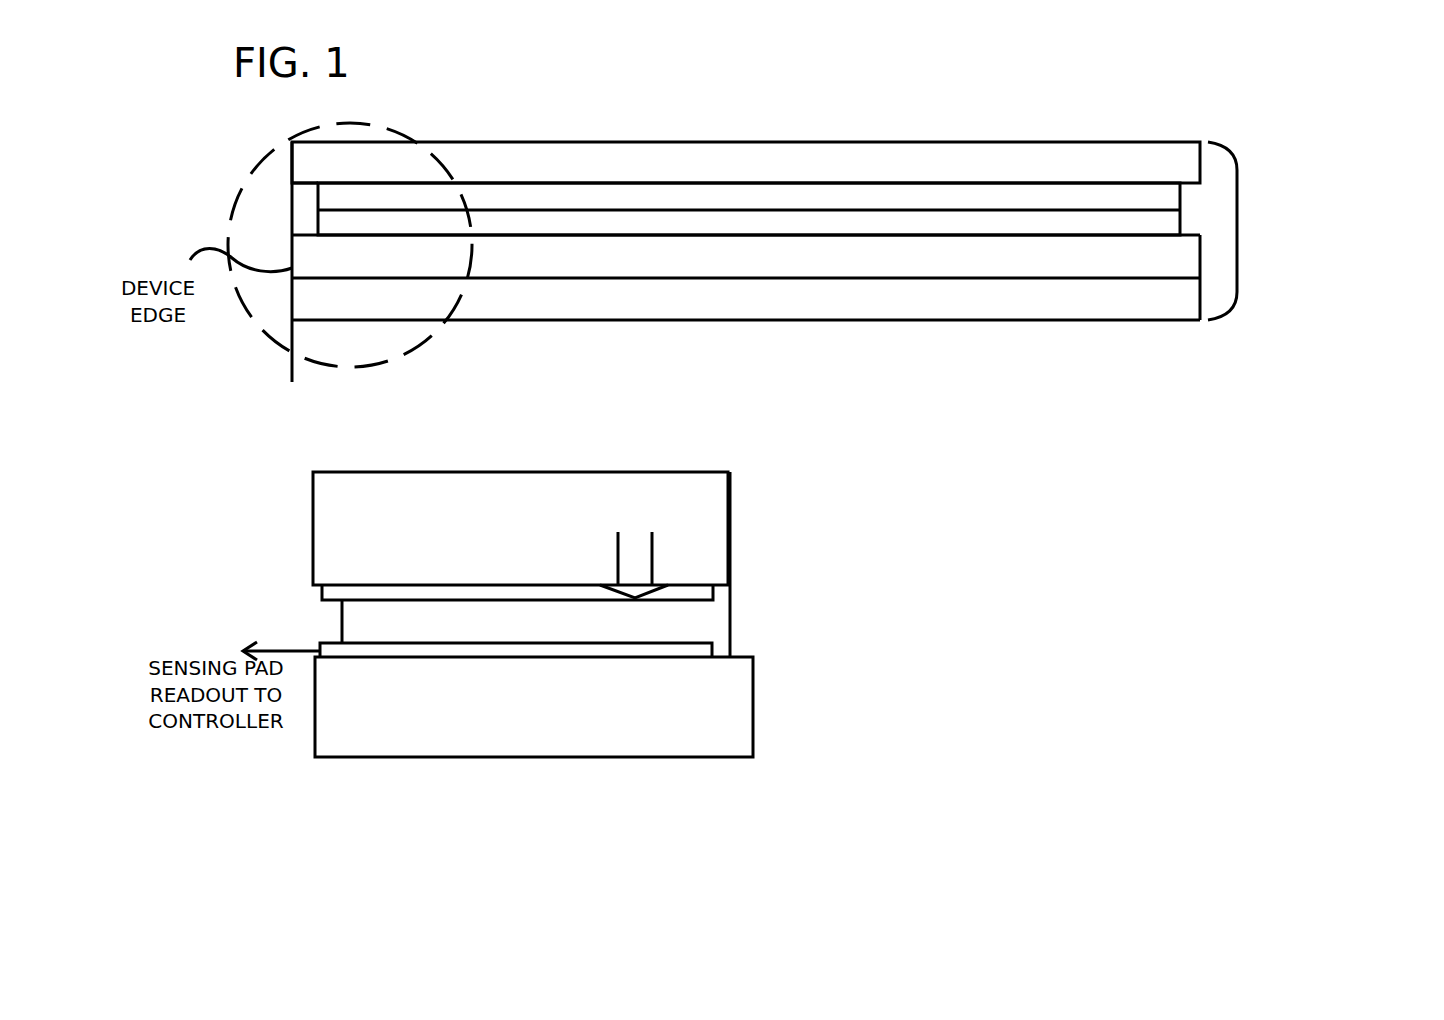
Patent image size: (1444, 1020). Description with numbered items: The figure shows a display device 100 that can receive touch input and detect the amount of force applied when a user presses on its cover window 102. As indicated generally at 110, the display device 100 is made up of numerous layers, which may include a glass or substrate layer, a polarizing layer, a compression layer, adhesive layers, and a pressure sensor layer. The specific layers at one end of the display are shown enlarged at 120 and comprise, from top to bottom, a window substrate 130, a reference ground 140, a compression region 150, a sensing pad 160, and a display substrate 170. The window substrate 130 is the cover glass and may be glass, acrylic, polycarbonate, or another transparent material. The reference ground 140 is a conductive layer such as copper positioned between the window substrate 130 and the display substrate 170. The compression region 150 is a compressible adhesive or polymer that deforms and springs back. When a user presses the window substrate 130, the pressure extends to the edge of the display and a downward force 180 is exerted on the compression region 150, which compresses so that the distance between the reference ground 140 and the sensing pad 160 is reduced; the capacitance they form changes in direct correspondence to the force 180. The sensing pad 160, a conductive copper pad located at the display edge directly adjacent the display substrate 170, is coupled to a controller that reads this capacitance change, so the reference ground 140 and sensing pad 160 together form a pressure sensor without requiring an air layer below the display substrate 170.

The display device 100 is at (660, 121).
The cover window 102 is at (1022, 141).
The layers making up display and pressure sensing 110 is at (1237, 229).
The specific layers for an end of the display 120 is at (372, 365).
The window substrate 130 is at (520, 528).
The reference ground 140 is at (720, 583).
The compression region 150 is at (536, 564).
The sensing pad 160 is at (712, 651).
The display substrate 170 is at (534, 707).
The force 180 is at (652, 556).